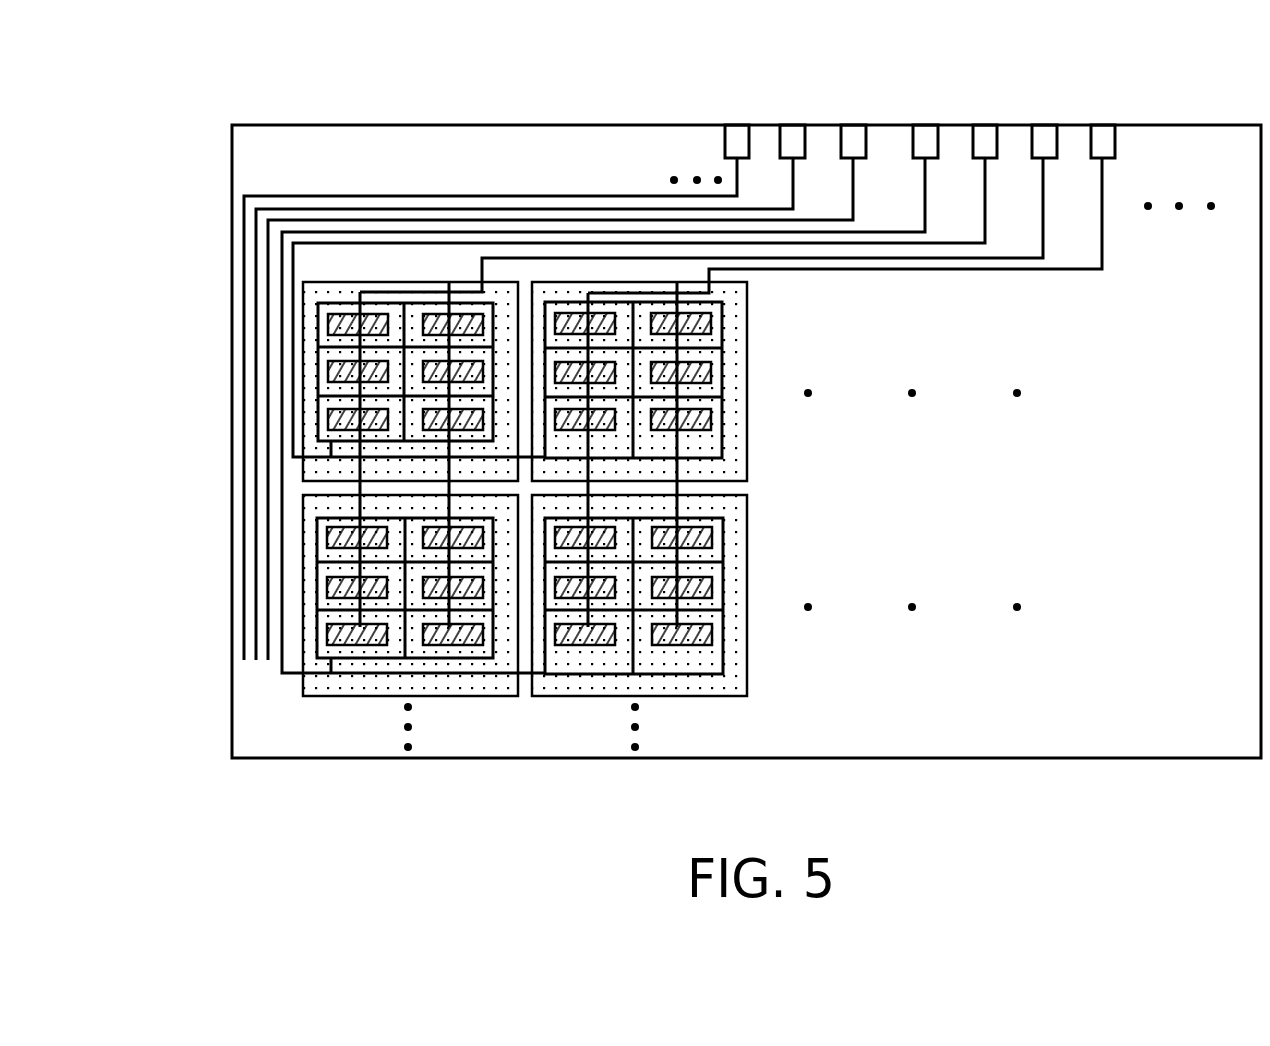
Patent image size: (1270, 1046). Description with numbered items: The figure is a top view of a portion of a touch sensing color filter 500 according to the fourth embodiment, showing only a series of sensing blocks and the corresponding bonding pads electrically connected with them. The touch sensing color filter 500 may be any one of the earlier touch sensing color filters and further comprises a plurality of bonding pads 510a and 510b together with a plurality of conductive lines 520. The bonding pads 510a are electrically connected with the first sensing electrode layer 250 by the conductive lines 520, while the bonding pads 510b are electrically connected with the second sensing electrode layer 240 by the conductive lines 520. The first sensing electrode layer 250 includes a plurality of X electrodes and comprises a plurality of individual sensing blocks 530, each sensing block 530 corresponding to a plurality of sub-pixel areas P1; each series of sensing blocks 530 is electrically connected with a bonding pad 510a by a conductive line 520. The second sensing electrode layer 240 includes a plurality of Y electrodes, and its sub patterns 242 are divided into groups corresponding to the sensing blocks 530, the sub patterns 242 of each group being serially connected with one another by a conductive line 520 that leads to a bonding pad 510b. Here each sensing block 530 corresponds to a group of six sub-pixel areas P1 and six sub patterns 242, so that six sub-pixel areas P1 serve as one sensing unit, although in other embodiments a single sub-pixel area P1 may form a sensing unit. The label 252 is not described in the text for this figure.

The touch sensing color filter 500 is at (1258, 802).
The bonding pads 510a is at (987, 135).
The bonding pads 510b is at (1102, 135).
The conductive lines 520 is at (660, 258).
The sensing blocks 530 is at (320, 427).
The second sensing electrode layer 240 is at (393, 325).
The sub patterns 242 is at (442, 318).
The first sensing electrode layer 250 is at (575, 325).
The second signal lines 252 is at (540, 298).
The sub-pixel areas P1 is at (322, 323).